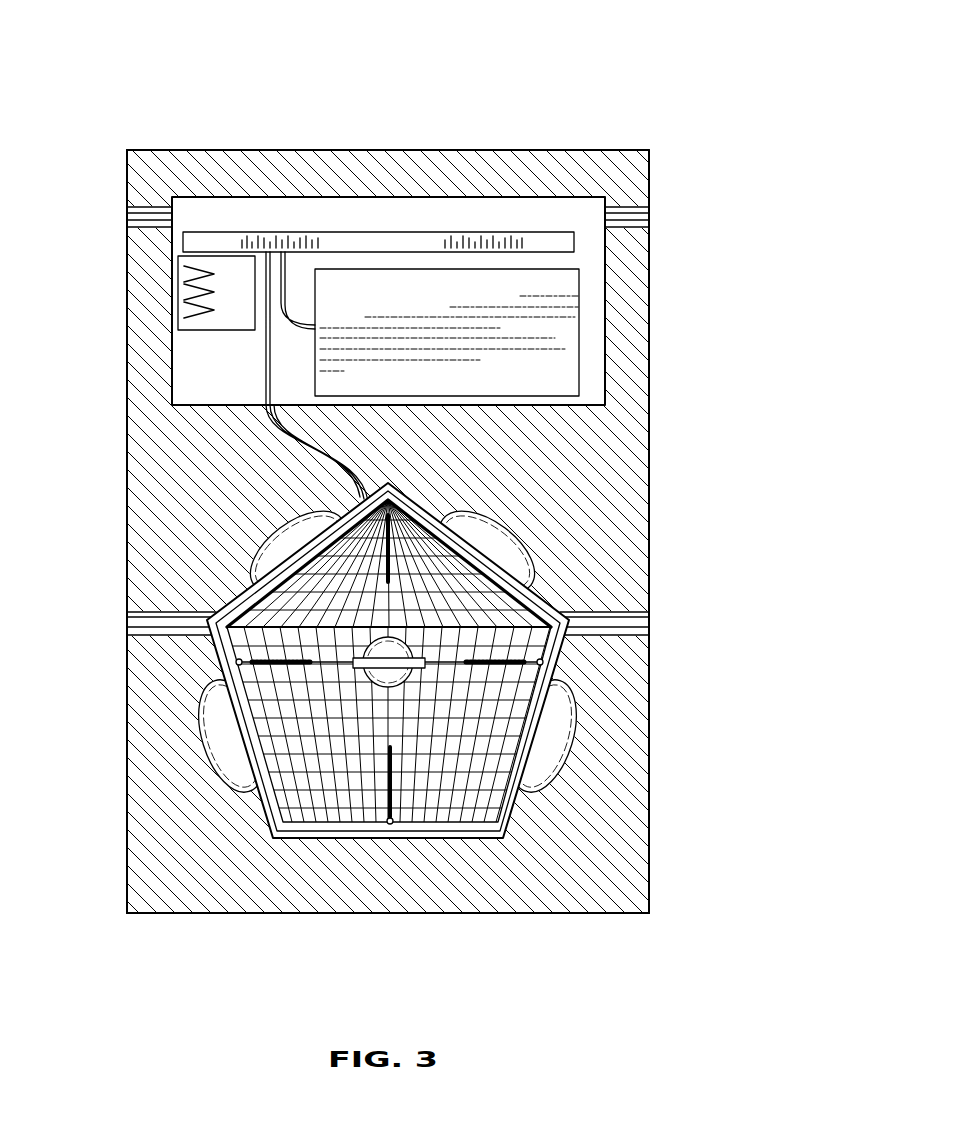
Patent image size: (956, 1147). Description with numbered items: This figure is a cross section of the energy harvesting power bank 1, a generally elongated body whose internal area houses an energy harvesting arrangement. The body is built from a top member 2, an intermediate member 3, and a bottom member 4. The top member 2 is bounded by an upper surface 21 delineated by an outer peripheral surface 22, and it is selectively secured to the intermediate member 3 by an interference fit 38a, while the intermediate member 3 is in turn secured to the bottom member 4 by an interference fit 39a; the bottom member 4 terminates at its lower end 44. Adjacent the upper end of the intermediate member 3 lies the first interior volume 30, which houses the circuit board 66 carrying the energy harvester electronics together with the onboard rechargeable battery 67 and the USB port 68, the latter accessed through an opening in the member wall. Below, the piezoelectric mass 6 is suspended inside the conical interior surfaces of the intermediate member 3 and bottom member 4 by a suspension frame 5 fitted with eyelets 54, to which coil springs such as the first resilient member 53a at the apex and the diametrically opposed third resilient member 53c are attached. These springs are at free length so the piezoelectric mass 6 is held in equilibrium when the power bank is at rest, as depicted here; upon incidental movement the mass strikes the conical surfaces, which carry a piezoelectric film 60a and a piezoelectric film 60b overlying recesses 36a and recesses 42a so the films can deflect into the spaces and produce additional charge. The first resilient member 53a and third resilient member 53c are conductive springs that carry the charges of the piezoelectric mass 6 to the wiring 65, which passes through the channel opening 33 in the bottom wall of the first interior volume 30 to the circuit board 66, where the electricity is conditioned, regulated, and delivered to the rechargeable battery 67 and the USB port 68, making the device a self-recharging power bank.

The energy harvesting power bank 1 is at (780, 250).
The top member 2 is at (142, 95).
The intermediate member 3 is at (664, 447).
The bottom member 4 is at (664, 697).
The suspension frame 5 is at (232, 750).
The piezoelectric mass 6 is at (350, 678).
The upper surface 21 is at (368, 150).
The outer peripheral surface 22 is at (127, 175).
The first interior volume 30 is at (299, 213).
The channel opening 33 is at (335, 440).
The recesses 36a is at (515, 540).
The interference fit 38a is at (649, 217).
The interference fit 39a is at (649, 625).
The recesses 42a is at (570, 742).
The lower end 44 is at (232, 913).
The first resilient member 53a is at (292, 566).
The third resilient member 53c is at (392, 802).
The eyelet 54 is at (378, 505).
The piezoelectric film 60a is at (455, 580).
The piezoelectric film 60b is at (320, 790).
The wiring 65 is at (275, 366).
The circuit board 66 is at (183, 240).
The rechargeable battery 67 is at (545, 340).
The USB port 68 is at (180, 292).